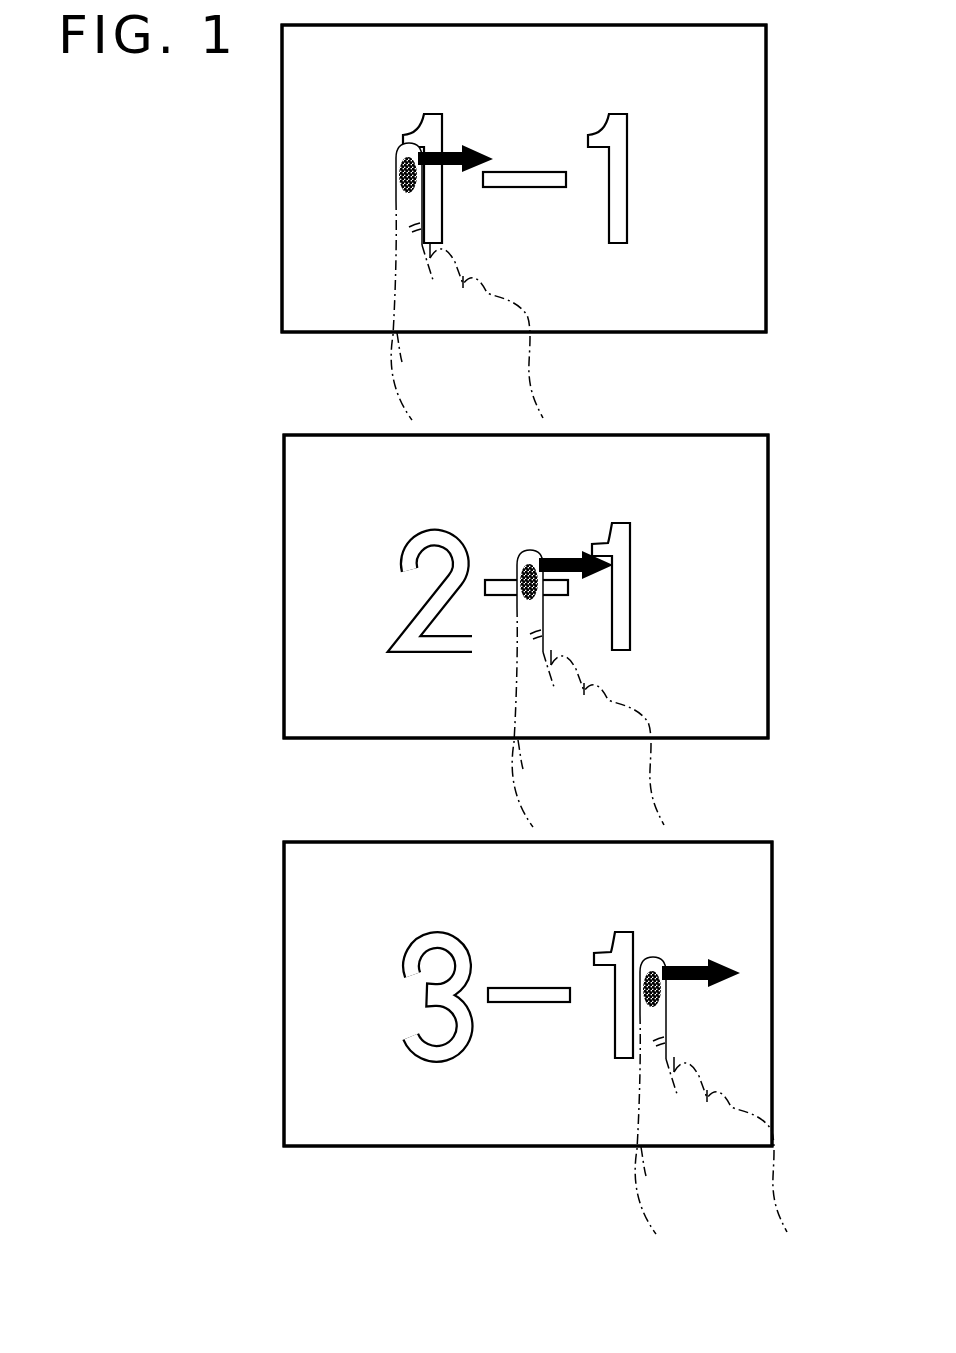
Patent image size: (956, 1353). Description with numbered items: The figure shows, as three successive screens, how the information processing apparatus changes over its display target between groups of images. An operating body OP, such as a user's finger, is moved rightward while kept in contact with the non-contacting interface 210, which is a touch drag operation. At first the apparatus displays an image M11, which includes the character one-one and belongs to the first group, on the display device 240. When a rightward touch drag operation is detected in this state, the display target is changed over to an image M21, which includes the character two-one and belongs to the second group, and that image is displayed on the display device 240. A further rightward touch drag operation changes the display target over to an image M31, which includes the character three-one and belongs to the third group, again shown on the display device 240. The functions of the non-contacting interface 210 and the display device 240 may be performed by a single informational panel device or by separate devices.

The non-contacting interface 210 is at (752, 90).
The display device 240 is at (752, 132).
The operating body OP is at (396, 219).
The image M11 is at (700, 25).
The image M21 is at (703, 435).
The image M31 is at (703, 842).